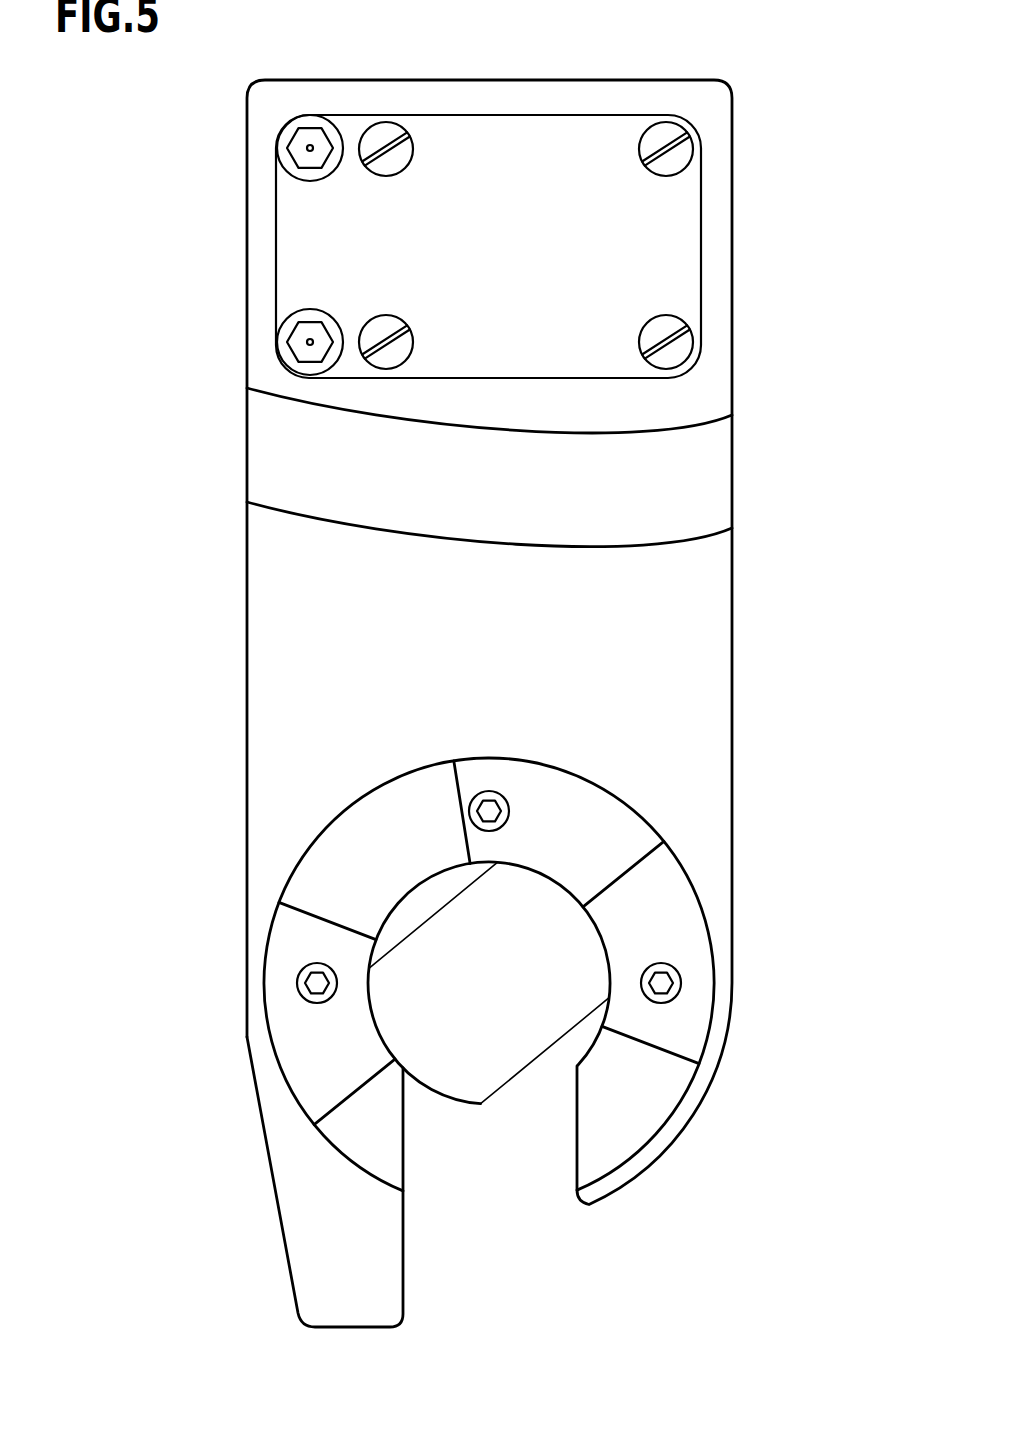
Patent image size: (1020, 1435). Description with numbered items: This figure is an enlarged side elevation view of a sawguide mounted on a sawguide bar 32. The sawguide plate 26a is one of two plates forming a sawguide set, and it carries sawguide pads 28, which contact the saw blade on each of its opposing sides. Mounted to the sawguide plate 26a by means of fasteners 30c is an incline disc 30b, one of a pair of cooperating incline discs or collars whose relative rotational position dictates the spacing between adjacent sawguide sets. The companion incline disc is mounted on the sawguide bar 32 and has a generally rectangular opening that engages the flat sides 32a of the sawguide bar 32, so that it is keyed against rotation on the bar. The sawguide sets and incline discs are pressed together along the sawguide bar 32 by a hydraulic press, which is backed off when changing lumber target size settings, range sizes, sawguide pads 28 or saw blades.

The sawguide plate 26a is at (558, 78).
The sawguide pad 28 is at (650, 282).
The incline disc 30b is at (645, 838).
The fasteners 30c is at (668, 990).
The sawguide bar 32 is at (497, 1012).
The flat sides 32a is at (413, 937).